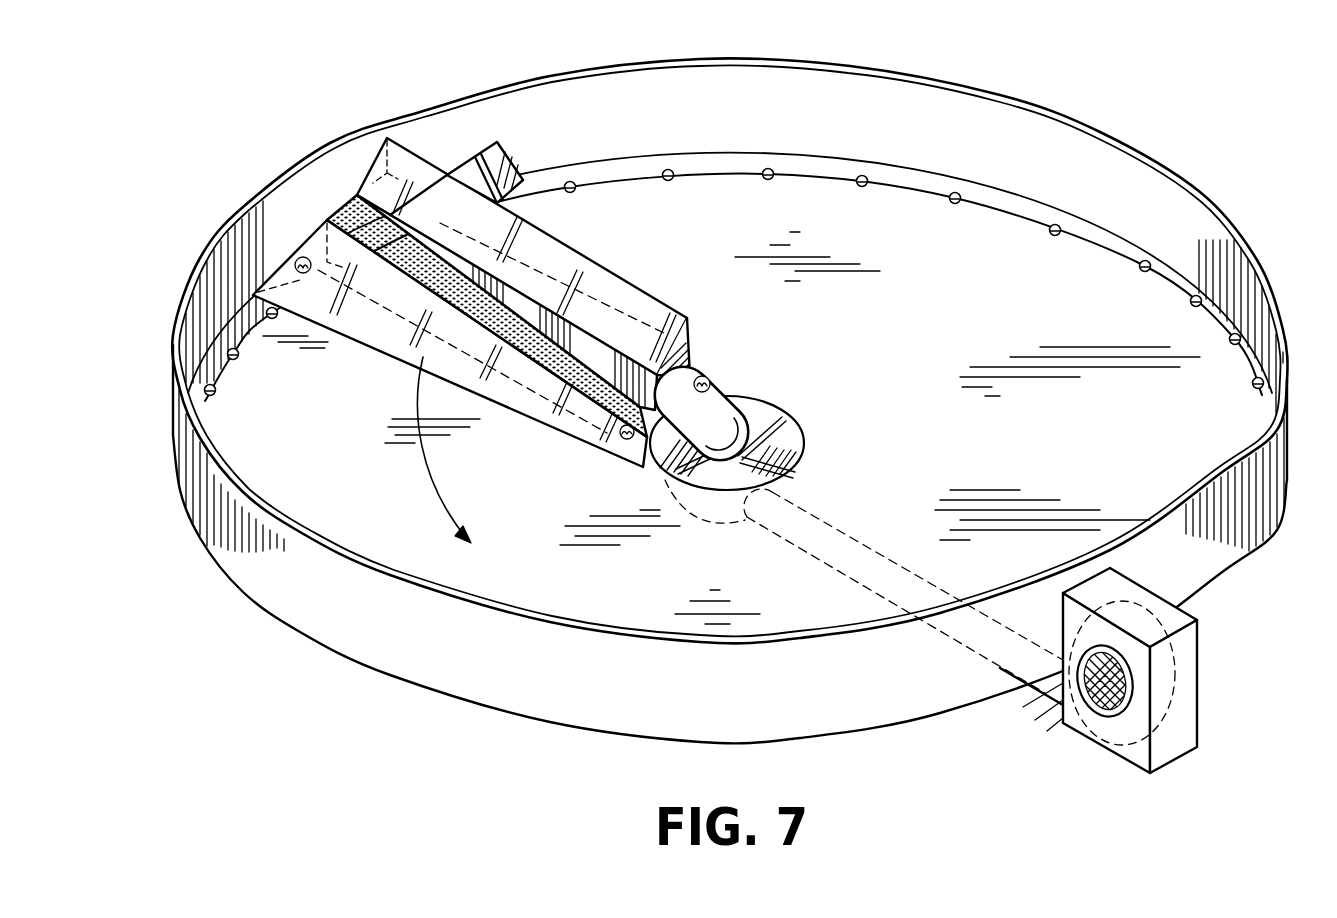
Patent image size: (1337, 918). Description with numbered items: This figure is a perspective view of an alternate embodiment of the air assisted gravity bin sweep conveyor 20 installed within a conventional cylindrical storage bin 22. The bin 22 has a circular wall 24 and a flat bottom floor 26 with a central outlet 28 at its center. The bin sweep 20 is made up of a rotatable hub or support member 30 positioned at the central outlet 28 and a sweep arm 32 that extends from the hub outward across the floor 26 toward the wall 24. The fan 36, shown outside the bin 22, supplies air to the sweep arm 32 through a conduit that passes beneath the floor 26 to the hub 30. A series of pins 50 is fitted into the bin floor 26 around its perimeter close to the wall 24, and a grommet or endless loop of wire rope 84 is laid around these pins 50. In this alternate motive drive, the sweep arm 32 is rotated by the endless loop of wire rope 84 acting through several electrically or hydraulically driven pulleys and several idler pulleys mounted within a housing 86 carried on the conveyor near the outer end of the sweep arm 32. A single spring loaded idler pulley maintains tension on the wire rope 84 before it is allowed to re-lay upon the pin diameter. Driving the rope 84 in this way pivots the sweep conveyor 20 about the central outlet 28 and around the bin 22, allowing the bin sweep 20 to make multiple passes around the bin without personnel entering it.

The air assisted gravity bin sweep conveyor 20 is at (385, 357).
The cylindrical storage bin 22 is at (950, 72).
The circular wall 24 is at (1118, 170).
The flat bottom floor 26 is at (1118, 300).
The central outlet 28 is at (782, 422).
The rotatable hub or support member 30 is at (802, 440).
The sweep arm 32 is at (619, 270).
The fan 36 is at (1188, 652).
The pins 50 is at (862, 195).
The endless loop of wire rope 84 is at (993, 215).
The housing 86 is at (460, 187).